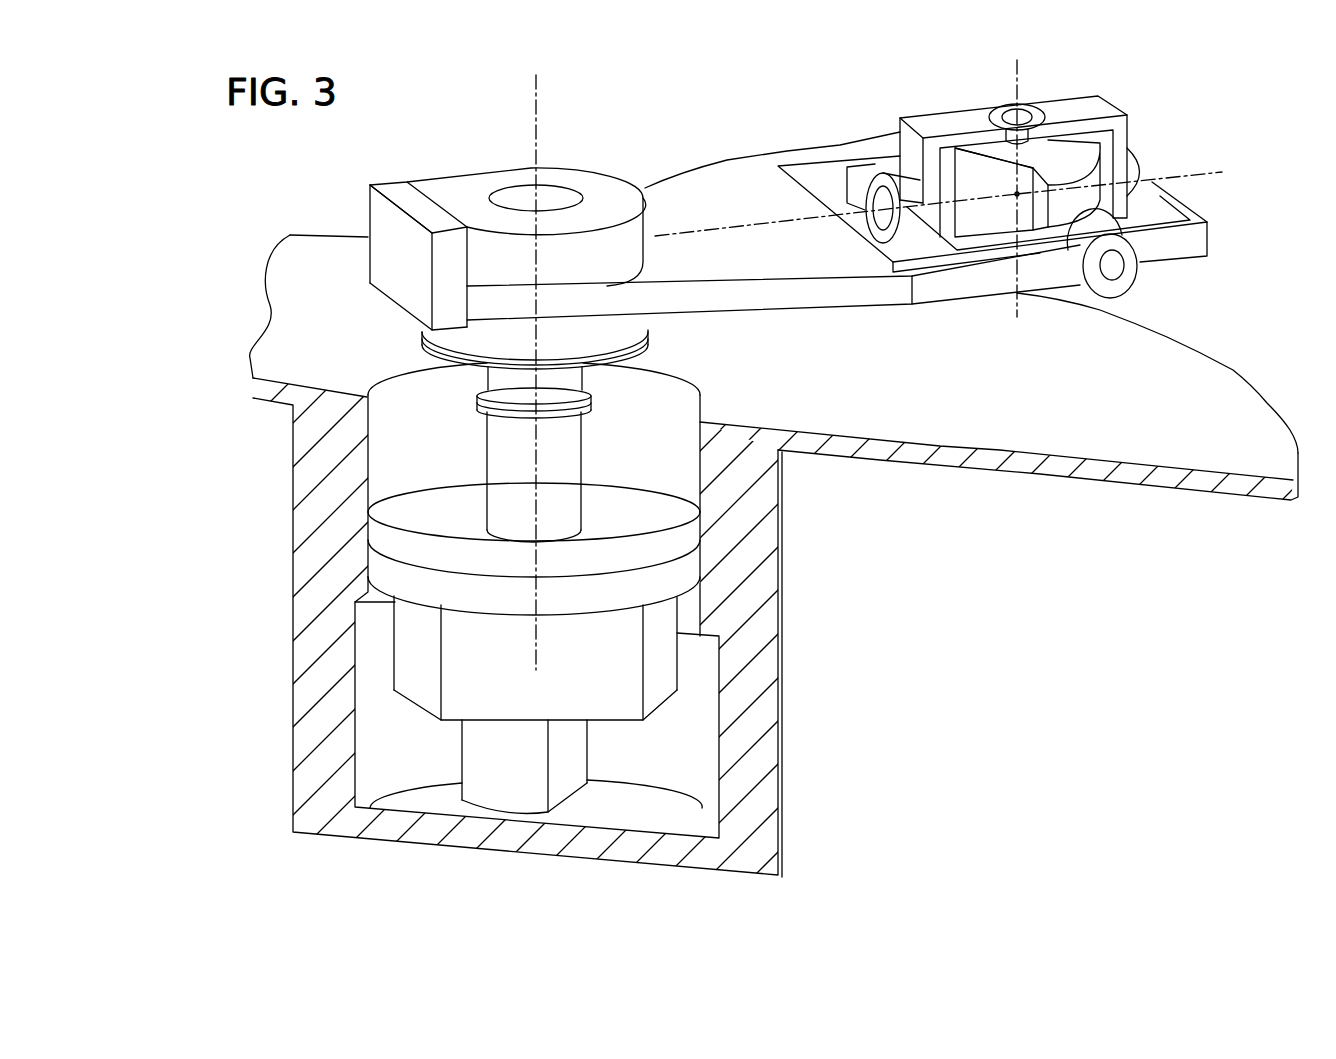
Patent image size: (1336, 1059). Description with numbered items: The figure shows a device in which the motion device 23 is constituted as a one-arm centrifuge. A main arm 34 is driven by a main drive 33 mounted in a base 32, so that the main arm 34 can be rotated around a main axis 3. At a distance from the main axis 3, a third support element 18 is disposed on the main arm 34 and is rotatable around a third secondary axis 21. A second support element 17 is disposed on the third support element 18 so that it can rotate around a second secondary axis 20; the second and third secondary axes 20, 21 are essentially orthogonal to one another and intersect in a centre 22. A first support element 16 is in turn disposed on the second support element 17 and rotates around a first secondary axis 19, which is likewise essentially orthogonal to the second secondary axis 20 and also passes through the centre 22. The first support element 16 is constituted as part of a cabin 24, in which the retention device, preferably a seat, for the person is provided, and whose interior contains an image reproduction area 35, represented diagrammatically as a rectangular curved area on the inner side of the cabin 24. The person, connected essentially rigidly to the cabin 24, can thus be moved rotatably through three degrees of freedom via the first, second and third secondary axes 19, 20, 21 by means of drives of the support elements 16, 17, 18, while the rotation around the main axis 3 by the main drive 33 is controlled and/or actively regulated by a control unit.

The main axis 3 is at (535, 138).
The first support element 16 is at (1013, 190).
The second support element 17 is at (1085, 110).
The third support element 18 is at (1182, 242).
The first secondary axis 19 is at (1020, 73).
The second secondary axis 20 is at (1220, 172).
The third secondary axis 21 is at (1139, 286).
The centre 22 is at (1013, 197).
The motion device 23 is at (738, 223).
The cabin 24 is at (1073, 155).
The base 32 is at (752, 764).
The main drive 33 is at (683, 572).
The main arm 34 is at (807, 255).
The image reproduction area 35 is at (1060, 215).